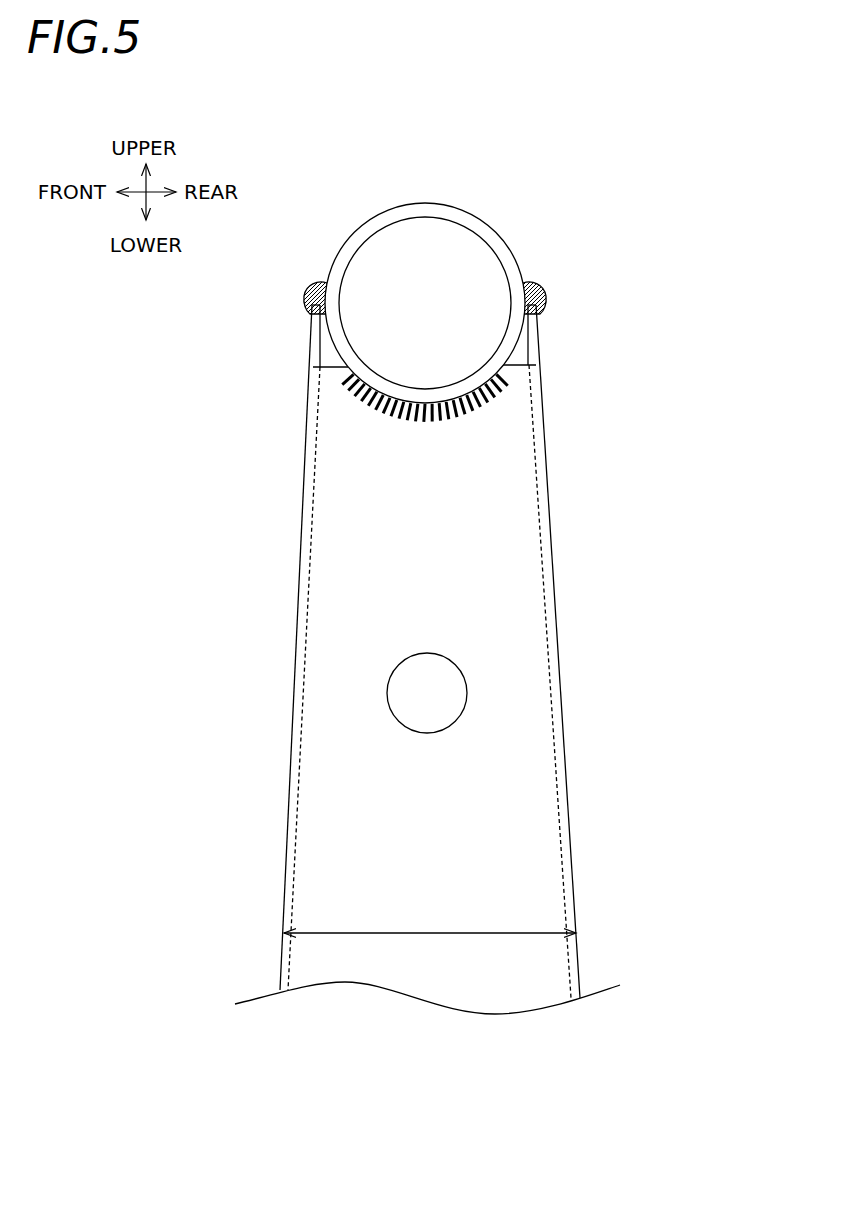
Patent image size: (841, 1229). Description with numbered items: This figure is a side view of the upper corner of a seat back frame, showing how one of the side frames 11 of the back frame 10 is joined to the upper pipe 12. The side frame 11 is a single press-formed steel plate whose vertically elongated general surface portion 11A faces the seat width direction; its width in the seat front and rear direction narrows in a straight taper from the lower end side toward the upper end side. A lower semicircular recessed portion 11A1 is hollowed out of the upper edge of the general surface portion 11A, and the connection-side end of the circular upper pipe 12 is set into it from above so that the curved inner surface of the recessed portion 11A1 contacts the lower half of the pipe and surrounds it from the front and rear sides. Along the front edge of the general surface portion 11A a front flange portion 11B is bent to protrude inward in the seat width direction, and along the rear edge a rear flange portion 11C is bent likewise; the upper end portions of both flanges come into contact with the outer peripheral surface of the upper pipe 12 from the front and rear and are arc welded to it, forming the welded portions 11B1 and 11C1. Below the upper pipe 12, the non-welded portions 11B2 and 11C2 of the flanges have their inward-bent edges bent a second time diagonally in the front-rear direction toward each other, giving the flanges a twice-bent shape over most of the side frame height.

The back frame 10 is at (518, 166).
The upper pipe 12 is at (385, 216).
The side frame 11 is at (414, 659).
The general surface portion 11A is at (500, 786).
The recessed portion 11A1 is at (430, 404).
The front flange portion 11B is at (263, 647).
The welded portion 11B1 is at (311, 314).
The non-welded portion 11B2 is at (298, 679).
The rear flange portion 11C is at (576, 651).
The welded portion 11C1 is at (539, 313).
The non-welded portion 11C2 is at (549, 510).